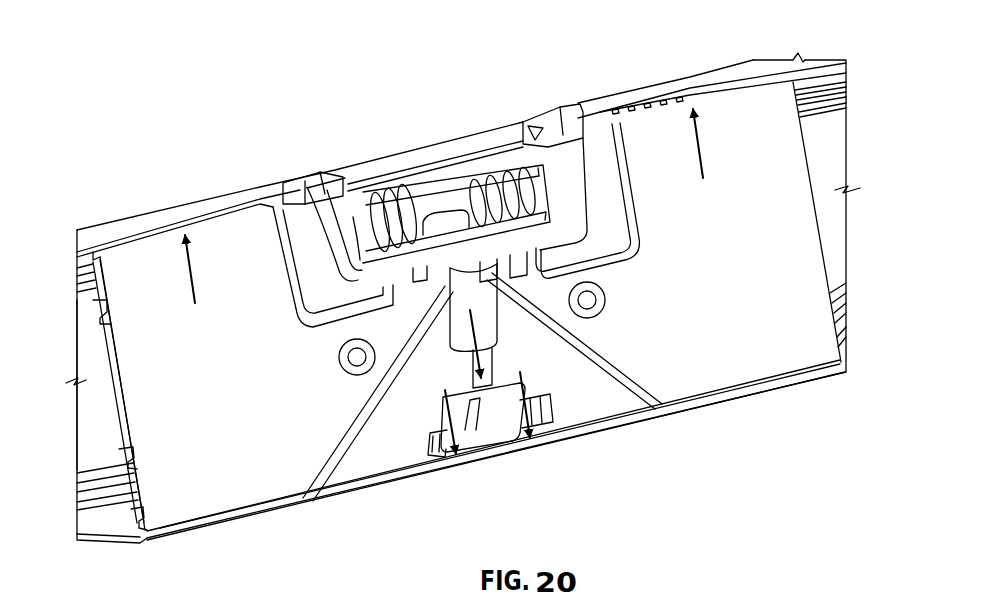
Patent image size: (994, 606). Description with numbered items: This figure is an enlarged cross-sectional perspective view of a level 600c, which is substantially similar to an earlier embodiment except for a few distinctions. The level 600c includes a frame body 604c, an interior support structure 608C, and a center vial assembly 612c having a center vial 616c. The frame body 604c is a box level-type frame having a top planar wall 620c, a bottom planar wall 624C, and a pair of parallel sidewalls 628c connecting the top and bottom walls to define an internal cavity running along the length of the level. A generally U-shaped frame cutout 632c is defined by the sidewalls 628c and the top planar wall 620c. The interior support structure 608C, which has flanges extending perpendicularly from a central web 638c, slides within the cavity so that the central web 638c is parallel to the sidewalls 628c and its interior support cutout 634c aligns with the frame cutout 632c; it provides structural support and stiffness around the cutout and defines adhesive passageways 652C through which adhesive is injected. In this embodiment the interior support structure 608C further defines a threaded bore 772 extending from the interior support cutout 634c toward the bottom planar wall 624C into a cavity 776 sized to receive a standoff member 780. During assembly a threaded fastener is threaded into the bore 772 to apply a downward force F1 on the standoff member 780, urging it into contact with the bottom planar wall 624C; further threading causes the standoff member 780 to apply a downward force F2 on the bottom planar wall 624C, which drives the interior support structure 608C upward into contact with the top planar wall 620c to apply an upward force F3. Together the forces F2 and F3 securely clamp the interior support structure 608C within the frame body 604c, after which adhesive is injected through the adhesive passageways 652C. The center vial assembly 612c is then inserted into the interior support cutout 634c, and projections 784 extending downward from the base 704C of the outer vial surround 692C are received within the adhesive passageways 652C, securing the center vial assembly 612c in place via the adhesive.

The level 600c is at (193, 68).
The frame body 604c is at (229, 185).
The center vial assembly 612c is at (397, 68).
The center vial 616c is at (473, 166).
The top planar wall 620c is at (140, 220).
The bottom planar wall 624C is at (610, 427).
The sidewall 628c is at (83, 403).
The frame cutout 632c is at (311, 181).
The interior support cutout 634c is at (347, 268).
The central web 638c is at (130, 395).
The adhesive passageways 652C is at (628, 376).
The outer vial surround 692C is at (563, 192).
The base 704C is at (597, 265).
The bore 772 is at (490, 367).
The cavity 776 is at (571, 428).
The standoff member 780 is at (492, 432).
The projections 784 is at (393, 302).
The interior support structure 608C is at (286, 502).
The downward force F1 is at (447, 336).
The downward force F2 is at (442, 430).
The upward force F3 is at (190, 290).